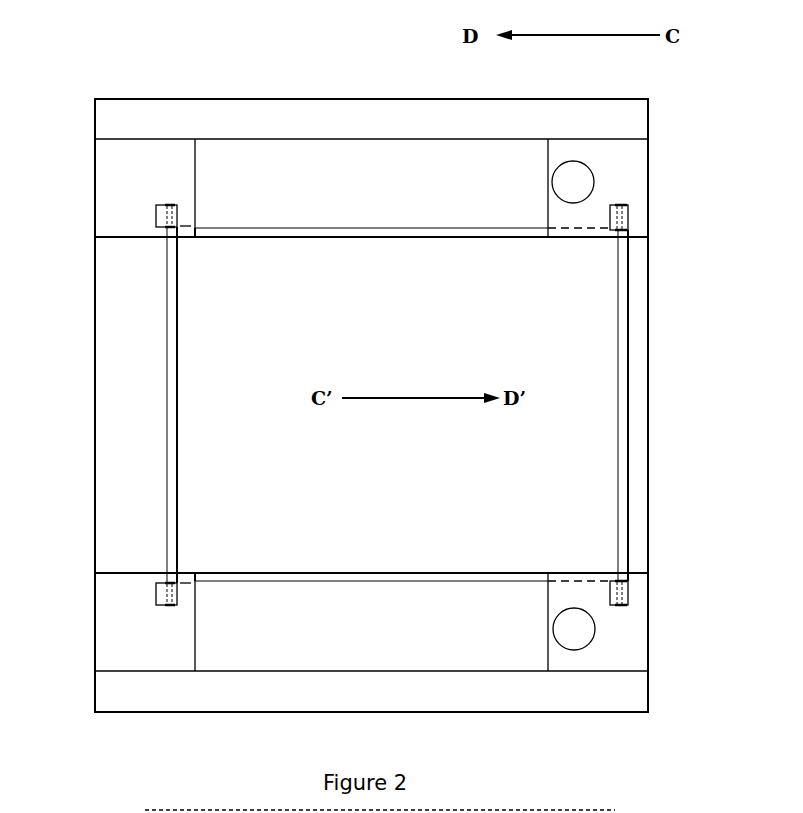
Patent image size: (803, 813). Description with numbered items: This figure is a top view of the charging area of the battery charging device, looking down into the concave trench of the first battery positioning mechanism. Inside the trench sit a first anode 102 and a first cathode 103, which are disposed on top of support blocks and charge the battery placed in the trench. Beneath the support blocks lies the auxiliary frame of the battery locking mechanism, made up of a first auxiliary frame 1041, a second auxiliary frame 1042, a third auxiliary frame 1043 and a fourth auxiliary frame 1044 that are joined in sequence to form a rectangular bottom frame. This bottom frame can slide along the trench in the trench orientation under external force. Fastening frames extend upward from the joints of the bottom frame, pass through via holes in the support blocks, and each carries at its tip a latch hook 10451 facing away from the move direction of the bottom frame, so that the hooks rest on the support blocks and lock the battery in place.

The first anode 102 is at (574, 631).
The first cathode 103 is at (573, 183).
The first auxiliary frame 1041 is at (622, 302).
The second auxiliary frame 1042 is at (352, 236).
The third auxiliary frame 1043 is at (170, 427).
The fourth auxiliary frame 1044 is at (341, 575).
The latch hook 10451 is at (612, 215).